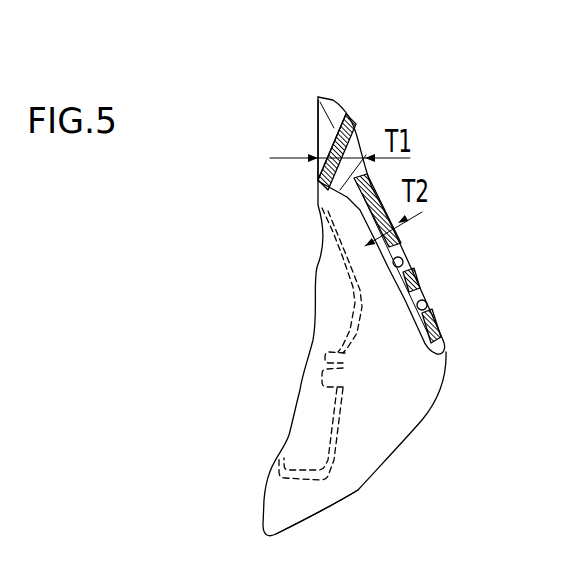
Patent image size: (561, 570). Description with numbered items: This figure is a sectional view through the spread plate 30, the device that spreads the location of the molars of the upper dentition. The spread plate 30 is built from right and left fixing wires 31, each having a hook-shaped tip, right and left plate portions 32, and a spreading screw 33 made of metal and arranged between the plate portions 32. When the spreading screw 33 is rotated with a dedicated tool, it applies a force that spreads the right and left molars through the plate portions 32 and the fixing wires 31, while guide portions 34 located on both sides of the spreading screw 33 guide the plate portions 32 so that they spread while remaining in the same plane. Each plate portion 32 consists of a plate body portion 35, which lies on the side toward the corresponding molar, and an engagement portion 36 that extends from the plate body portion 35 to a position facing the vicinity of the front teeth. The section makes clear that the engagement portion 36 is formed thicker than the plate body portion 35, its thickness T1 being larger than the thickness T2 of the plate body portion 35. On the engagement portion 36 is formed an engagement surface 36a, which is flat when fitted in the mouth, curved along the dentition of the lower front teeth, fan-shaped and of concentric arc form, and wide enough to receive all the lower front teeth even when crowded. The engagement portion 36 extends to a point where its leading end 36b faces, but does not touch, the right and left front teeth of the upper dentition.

The spread plate 30 is at (266, 146).
The fixing wire 31 is at (350, 315).
The plate portion 32 is at (360, 456).
The spreading screw 33 is at (420, 279).
The guide portion 34 is at (403, 257).
The plate body portion 35 is at (400, 234).
The engagement portion 36 is at (337, 112).
The engagement surface 36a is at (312, 127).
The leading end 36b is at (320, 128).